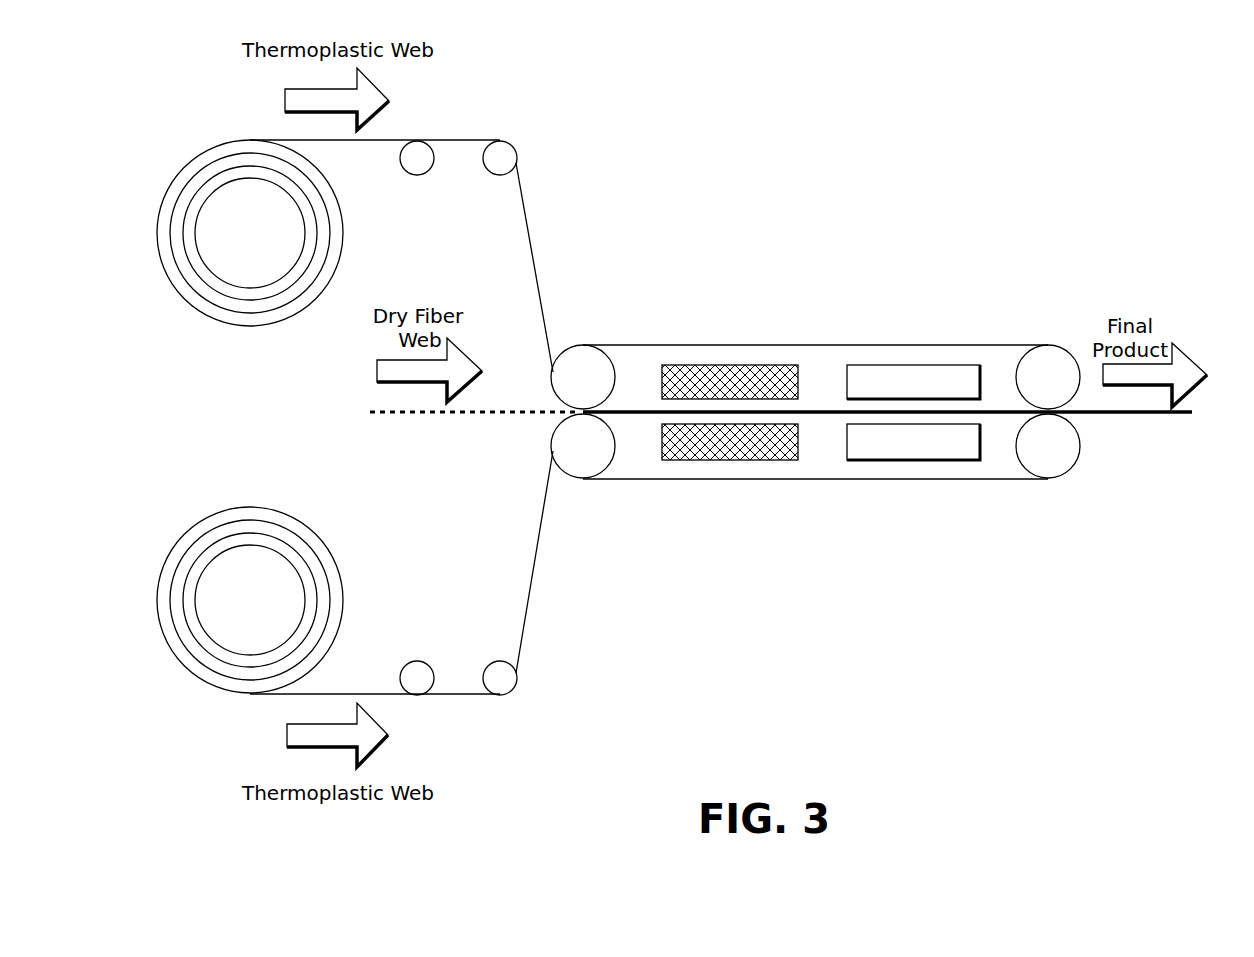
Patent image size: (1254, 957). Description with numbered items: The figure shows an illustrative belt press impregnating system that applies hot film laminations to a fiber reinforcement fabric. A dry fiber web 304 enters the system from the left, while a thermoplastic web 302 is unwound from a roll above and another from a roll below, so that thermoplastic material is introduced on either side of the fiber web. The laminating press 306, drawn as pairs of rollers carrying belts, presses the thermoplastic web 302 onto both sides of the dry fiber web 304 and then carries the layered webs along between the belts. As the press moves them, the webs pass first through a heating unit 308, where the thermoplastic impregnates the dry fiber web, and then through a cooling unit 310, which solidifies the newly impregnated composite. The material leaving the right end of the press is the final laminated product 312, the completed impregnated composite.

The thermoplastic web 302 is at (343, 227).
The dry fiber web 304 is at (410, 412).
The laminating press 306 is at (605, 472).
The heating unit 308 is at (730, 363).
The cooling unit 310 is at (935, 363).
The final laminated product 312 is at (1097, 413).